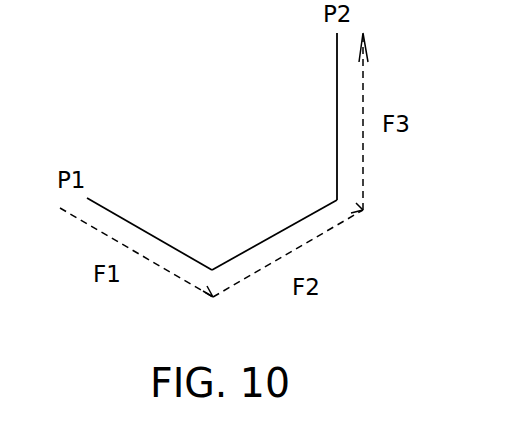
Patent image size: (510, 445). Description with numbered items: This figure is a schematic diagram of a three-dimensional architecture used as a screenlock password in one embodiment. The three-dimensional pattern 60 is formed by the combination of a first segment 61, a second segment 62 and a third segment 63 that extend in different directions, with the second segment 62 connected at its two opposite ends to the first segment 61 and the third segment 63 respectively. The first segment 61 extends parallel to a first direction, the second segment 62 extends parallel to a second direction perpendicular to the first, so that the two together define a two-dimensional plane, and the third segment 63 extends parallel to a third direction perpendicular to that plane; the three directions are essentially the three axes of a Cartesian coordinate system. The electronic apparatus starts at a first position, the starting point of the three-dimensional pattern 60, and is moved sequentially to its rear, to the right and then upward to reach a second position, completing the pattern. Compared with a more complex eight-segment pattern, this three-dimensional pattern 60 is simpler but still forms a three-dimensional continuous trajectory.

The three-dimensional pattern 60 is at (193, 112).
The first segment 61 is at (140, 226).
The second segment 62 is at (282, 228).
The third segment 63 is at (337, 115).